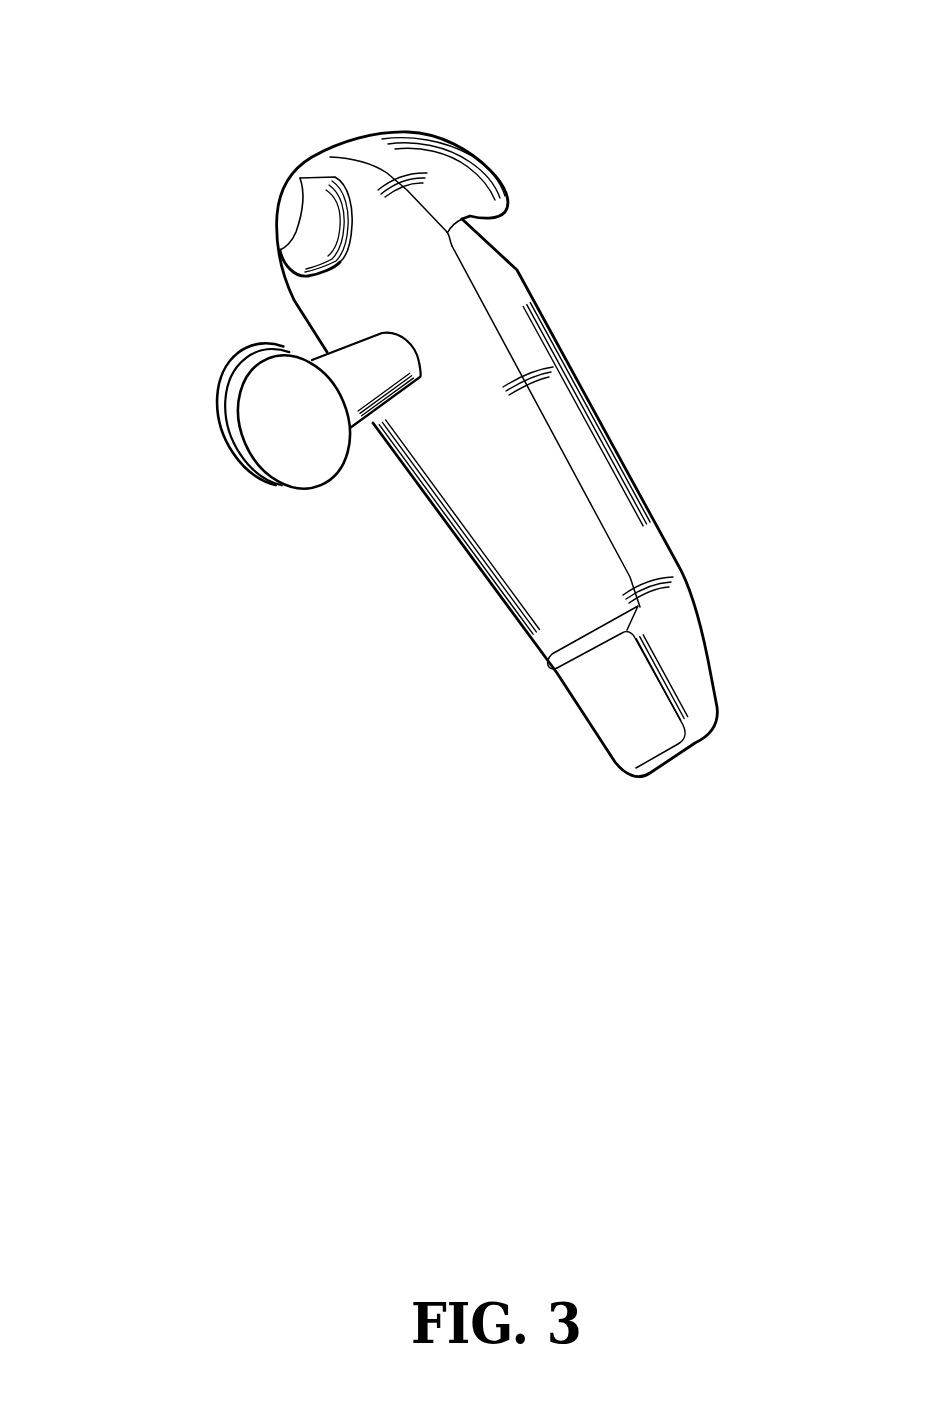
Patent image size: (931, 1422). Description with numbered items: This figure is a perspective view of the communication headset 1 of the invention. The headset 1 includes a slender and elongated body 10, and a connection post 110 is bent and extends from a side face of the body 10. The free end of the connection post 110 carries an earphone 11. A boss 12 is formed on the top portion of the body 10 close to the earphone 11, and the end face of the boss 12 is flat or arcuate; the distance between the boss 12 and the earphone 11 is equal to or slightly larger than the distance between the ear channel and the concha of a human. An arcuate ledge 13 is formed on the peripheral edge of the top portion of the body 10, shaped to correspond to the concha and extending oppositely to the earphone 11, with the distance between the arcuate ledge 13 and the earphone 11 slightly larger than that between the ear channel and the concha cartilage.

The headset 1 is at (681, 156).
The body 10 is at (460, 487).
The earphone 11 is at (237, 383).
The connection post 110 is at (360, 358).
The boss 12 is at (310, 255).
The arcuate ledge 13 is at (480, 197).